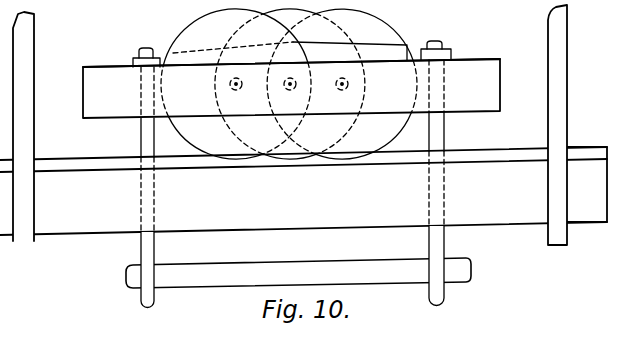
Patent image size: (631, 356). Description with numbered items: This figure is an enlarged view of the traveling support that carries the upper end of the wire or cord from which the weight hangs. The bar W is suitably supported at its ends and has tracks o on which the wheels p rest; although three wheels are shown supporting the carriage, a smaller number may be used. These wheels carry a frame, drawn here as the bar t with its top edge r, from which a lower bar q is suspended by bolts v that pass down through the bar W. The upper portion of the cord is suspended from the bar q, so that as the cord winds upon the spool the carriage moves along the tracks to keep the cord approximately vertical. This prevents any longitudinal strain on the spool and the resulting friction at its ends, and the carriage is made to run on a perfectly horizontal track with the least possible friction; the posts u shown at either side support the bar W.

The bar W is at (303, 191).
The tracks o is at (580, 146).
The post u is at (560, 70).
The bar q is at (199, 281).
The wheels p is at (283, 10).
The bar t is at (280, 88).
The bar top edge r is at (83, 67).
The bolts v is at (430, 133).